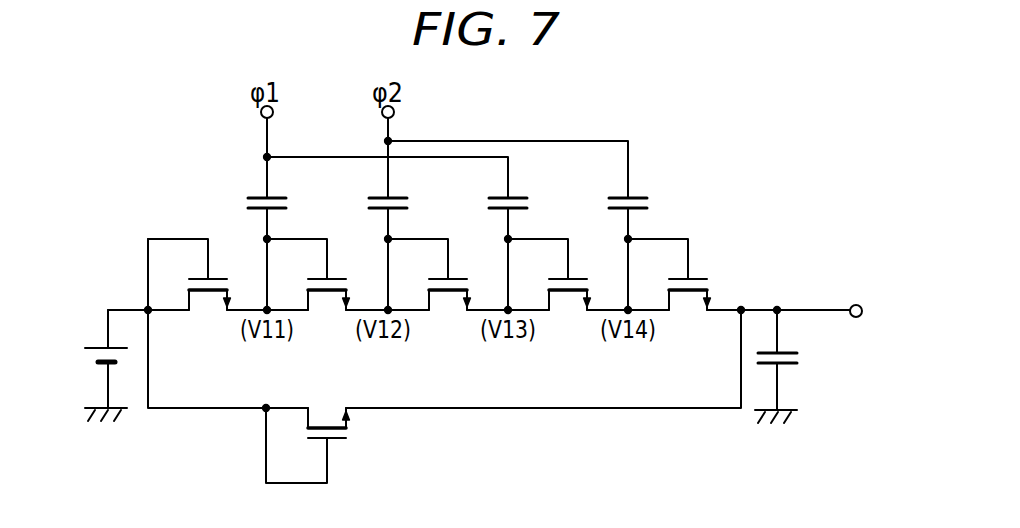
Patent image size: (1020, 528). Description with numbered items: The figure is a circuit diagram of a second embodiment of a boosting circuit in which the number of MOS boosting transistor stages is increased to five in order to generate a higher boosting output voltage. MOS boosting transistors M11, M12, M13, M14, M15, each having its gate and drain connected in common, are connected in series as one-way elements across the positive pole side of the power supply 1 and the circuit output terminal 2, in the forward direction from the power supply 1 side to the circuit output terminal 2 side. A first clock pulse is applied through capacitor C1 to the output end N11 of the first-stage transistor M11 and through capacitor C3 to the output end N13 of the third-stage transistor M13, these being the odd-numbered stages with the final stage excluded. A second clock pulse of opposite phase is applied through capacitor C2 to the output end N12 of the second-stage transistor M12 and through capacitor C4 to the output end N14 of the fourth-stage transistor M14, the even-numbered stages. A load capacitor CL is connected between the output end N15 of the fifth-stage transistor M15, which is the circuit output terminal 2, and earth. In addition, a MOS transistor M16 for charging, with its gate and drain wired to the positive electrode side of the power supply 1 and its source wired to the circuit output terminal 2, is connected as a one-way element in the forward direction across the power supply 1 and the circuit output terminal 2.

The power supply 1 is at (88, 360).
The circuit output terminal 2 is at (858, 304).
The MOS boosting transistor M11 is at (210, 311).
The MOS boosting transistor M12 is at (325, 311).
The MOS boosting transistor M13 is at (447, 311).
The MOS boosting transistor M14 is at (569, 311).
The MOS boosting transistor M15 is at (688, 311).
The MOS transistor for charging M16 is at (308, 431).
The capacitor C1 is at (261, 188).
The capacitor C2 is at (377, 188).
The capacitor C3 is at (498, 188).
The capacitor C4 is at (617, 188).
The load capacitor CL is at (799, 366).
The output end N11 is at (271, 306).
The output end N12 is at (392, 306).
The output end N13 is at (512, 306).
The output end N14 is at (632, 306).
The output end N15 is at (741, 306).